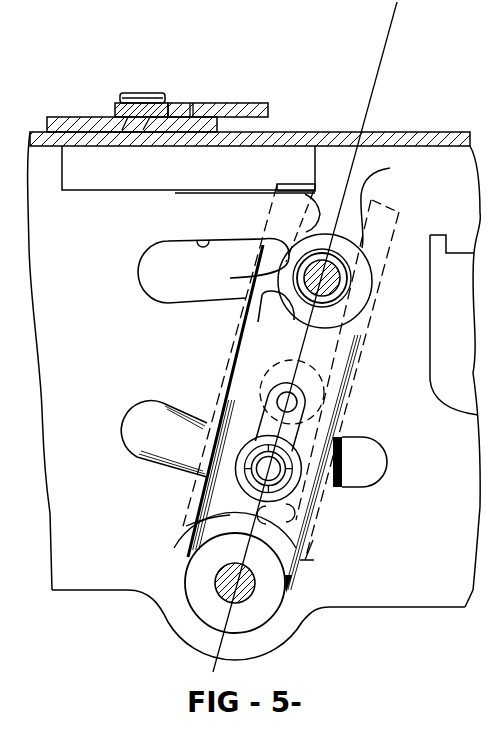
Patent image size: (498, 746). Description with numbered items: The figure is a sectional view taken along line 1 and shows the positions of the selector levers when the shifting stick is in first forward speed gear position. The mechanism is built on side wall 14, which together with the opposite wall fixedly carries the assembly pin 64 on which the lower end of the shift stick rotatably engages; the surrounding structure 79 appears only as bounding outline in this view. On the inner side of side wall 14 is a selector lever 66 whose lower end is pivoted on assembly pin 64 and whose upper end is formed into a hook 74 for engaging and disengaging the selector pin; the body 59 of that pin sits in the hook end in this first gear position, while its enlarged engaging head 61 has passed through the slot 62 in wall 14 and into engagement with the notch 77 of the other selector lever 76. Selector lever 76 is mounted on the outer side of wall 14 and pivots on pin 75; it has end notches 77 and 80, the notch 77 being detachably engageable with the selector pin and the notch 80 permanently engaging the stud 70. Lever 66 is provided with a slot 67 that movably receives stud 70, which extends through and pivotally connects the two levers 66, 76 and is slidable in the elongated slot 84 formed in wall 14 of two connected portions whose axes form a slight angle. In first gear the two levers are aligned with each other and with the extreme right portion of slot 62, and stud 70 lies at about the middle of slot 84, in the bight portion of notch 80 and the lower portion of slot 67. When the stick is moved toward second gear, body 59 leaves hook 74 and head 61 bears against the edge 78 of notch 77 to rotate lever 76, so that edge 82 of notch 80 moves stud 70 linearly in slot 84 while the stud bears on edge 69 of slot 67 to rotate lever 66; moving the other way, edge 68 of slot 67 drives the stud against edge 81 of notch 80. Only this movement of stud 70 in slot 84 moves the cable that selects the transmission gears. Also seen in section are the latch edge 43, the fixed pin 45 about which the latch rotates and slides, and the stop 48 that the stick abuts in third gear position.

The section line 1 is at (315, 337).
The side wall 14 is at (42, 162).
The edge of latch 43 is at (270, 113).
The fixed pin 45 is at (143, 94).
The stop 48 is at (191, 105).
The body of selector pin 59 is at (343, 288).
The engaging head 61 is at (343, 265).
The slot in wall 62 is at (200, 246).
The assembly pin 64 is at (252, 590).
The selector lever 66 is at (230, 369).
The slot 67 is at (292, 410).
The edge of slot 68 is at (252, 422).
The edge of slot 69 is at (340, 429).
The stud 70 is at (278, 473).
The hook 74 is at (262, 272).
The pin 75 is at (310, 393).
The selector lever 76 is at (220, 340).
The end notch 77 is at (333, 224).
The edge of notch 78 is at (316, 208).
The wall 79 is at (207, 260).
The end notch 80 is at (264, 521).
The edge of notch 81 is at (293, 533).
The edge of notch 82 is at (186, 526).
The elongated slot 84 is at (160, 447).